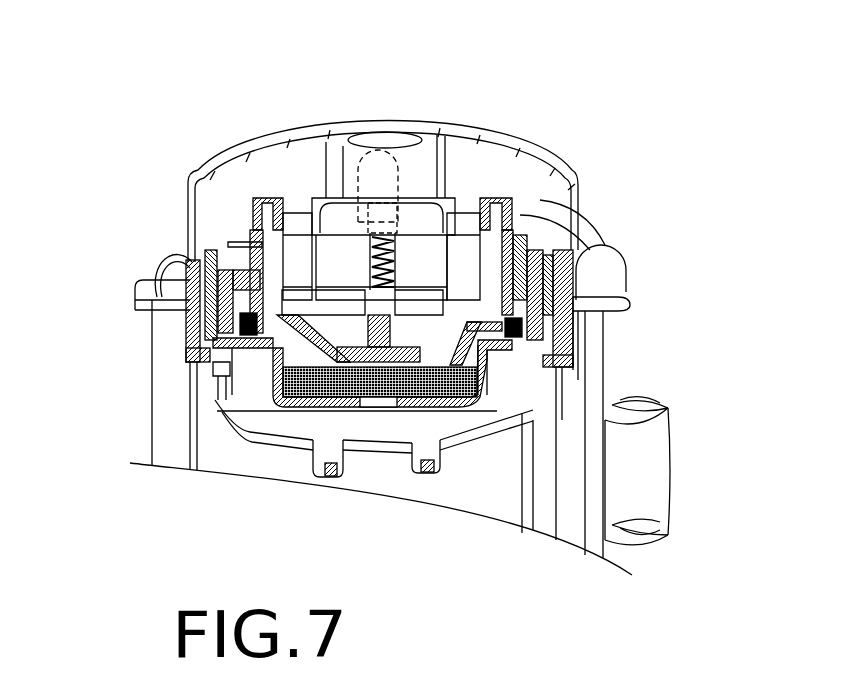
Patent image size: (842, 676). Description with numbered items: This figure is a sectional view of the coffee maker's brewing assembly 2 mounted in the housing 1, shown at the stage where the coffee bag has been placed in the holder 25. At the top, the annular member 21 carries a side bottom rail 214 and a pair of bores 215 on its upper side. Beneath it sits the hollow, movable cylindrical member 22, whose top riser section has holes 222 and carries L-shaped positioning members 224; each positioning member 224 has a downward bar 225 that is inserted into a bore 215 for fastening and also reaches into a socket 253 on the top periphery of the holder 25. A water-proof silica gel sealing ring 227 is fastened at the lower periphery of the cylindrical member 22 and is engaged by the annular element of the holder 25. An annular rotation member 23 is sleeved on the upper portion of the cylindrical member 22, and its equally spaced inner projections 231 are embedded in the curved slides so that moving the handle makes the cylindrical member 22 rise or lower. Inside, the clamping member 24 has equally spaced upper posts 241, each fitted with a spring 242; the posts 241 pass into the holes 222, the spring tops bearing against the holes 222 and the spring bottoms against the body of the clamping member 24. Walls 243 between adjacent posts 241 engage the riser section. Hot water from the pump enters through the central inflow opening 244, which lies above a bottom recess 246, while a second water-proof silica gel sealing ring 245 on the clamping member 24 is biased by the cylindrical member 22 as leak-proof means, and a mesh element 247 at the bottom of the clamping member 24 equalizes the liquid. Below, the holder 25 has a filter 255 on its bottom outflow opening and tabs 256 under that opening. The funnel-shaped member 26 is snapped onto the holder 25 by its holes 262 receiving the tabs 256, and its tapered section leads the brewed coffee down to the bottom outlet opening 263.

The housing 1 is at (250, 463).
The brewing assembly 2 is at (338, 62).
The annular member 21 is at (620, 295).
The side bottom rail 214 is at (565, 378).
The bore 215 is at (573, 320).
The cylindrical member 22 is at (210, 248).
The hole 222 is at (360, 172).
The L-shaped positioning member 224 is at (555, 255).
The downward bar 225 is at (603, 280).
The water-proof silica gel sealing ring 227 is at (205, 283).
The annular rotation member 23 is at (540, 250).
The projection 231 is at (525, 240).
The clamping member 24 is at (310, 480).
The upper post 241 is at (500, 425).
The spring 242 is at (420, 232).
The wall 243 is at (298, 240).
The central inflow opening 244 is at (462, 415).
The water-proof silica gel sealing ring 245 is at (473, 252).
The bottom recess 246 is at (383, 347).
The mesh element 247 is at (228, 276).
The holder 25 is at (522, 422).
The socket 253 is at (603, 435).
The filter 255 is at (330, 455).
The tab 256 is at (222, 373).
The funnel-shaped member 26 is at (228, 386).
The hole 262 is at (224, 372).
The bottom outlet opening 263 is at (343, 477).